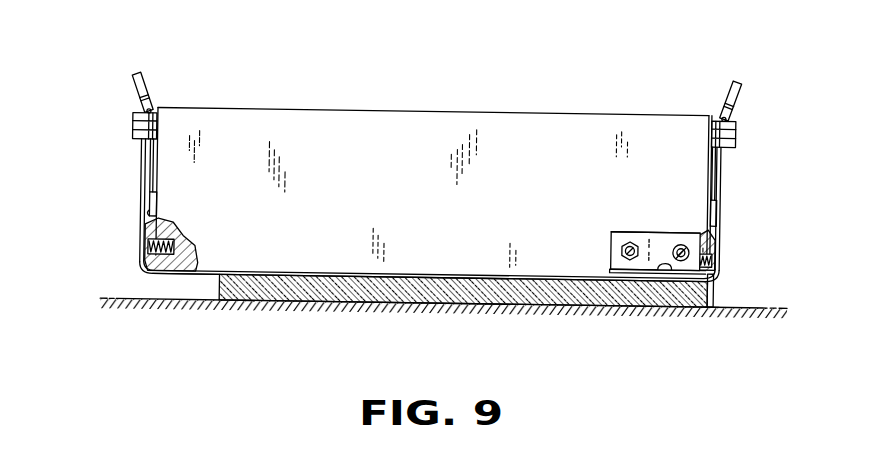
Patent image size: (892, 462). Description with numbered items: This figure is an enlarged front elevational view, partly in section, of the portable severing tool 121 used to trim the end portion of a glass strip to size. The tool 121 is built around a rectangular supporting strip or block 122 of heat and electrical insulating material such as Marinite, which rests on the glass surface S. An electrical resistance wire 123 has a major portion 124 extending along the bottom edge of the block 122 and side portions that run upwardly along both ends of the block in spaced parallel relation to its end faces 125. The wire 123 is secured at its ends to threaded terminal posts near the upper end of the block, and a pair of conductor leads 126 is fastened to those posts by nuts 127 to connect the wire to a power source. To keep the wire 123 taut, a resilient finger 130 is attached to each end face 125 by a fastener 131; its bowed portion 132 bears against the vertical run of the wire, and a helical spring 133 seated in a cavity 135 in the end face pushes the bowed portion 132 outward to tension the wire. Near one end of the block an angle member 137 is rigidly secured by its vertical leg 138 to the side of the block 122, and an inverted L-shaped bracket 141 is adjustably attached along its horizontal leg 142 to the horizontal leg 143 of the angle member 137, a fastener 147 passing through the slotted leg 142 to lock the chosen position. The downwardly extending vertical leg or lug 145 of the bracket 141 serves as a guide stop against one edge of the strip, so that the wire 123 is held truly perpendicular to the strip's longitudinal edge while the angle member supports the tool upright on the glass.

The portable severing tool 121 is at (314, 97).
The supporting strip or block 122 is at (384, 133).
The electrical resistance wire 123 is at (166, 290).
The major portion of resistance wire 124 is at (205, 290).
The end face of block 125 is at (150, 160).
The conductor lead 126 is at (141, 80).
The nut 127 is at (134, 120).
The resilient finger 130 is at (160, 212).
The fastener 131 is at (146, 195).
The bowed portion of finger 132 is at (144, 224).
The helical spring 133 is at (153, 250).
The cavity 135 is at (180, 262).
The angle member 137 is at (600, 258).
The vertical leg of angle member 138 is at (630, 236).
The inverted L-shaped bracket 141 is at (722, 304).
The horizontal leg of bracket 142 is at (656, 264).
The horizontal leg of angle member 143 is at (614, 270).
The vertical leg or lug of bracket 145 is at (718, 292).
The fastener 147 is at (660, 258).
The supporting surface S is at (300, 303).